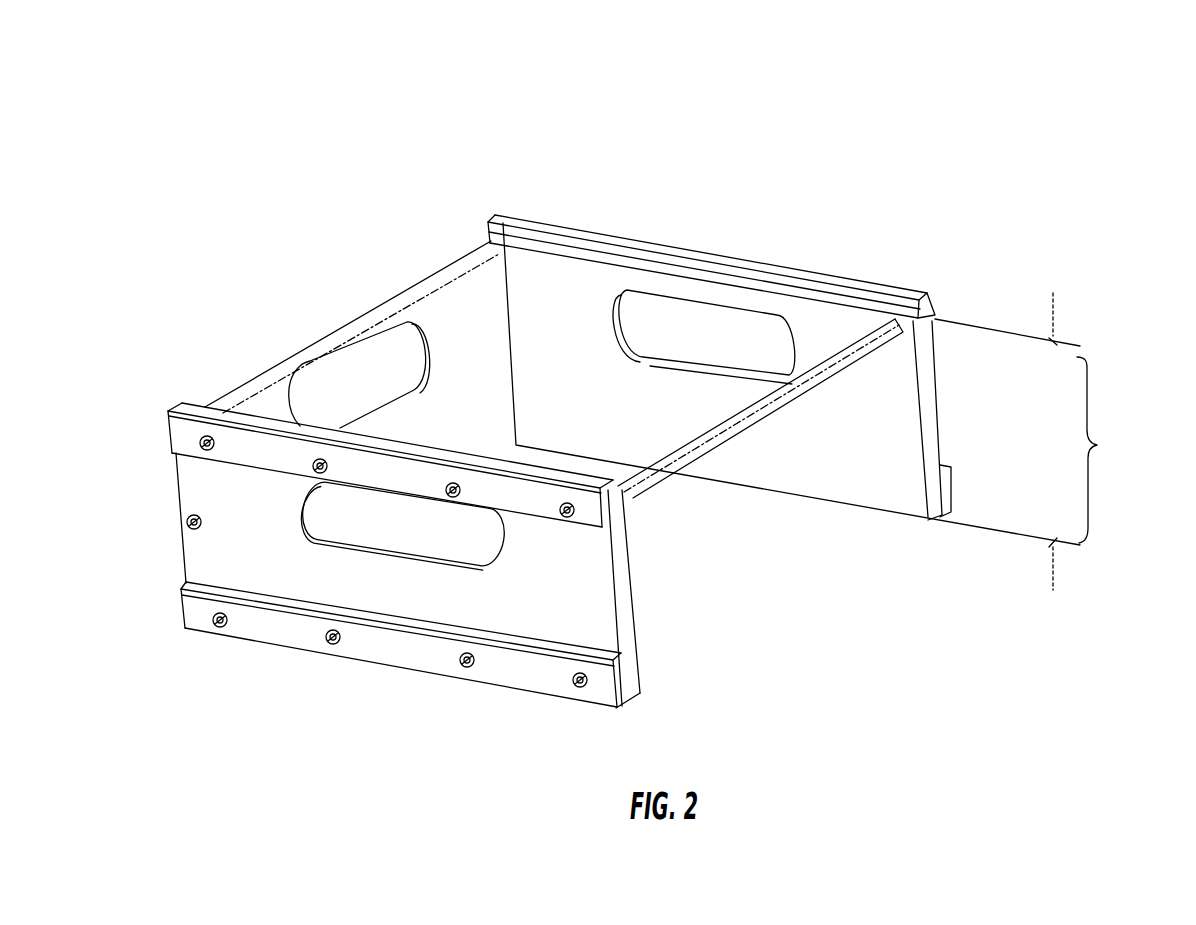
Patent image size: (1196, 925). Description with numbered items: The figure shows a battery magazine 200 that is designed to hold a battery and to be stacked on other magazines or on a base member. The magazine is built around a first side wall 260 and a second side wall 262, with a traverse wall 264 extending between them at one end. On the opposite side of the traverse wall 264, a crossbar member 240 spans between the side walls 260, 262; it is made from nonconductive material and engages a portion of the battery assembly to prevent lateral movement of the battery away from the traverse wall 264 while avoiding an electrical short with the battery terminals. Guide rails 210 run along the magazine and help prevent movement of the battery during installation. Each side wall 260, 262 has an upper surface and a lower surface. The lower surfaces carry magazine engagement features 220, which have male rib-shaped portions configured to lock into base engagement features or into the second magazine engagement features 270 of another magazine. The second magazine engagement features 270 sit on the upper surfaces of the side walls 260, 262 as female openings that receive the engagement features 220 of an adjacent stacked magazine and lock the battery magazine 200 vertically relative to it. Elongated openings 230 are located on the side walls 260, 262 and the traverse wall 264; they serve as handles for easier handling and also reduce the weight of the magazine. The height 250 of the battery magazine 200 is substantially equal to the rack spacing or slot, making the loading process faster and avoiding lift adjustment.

The battery magazine 200 is at (865, 123).
The guide rails 210 is at (490, 215).
The magazine engagement features 220 is at (258, 643).
The elongated openings 230 is at (708, 333).
The crossbar member 240 is at (652, 482).
The height 250 is at (1097, 445).
The first side wall 260 is at (633, 641).
The second side wall 262 is at (852, 482).
The traverse wall 264 is at (246, 386).
The second magazine engagement features 270 is at (580, 228).